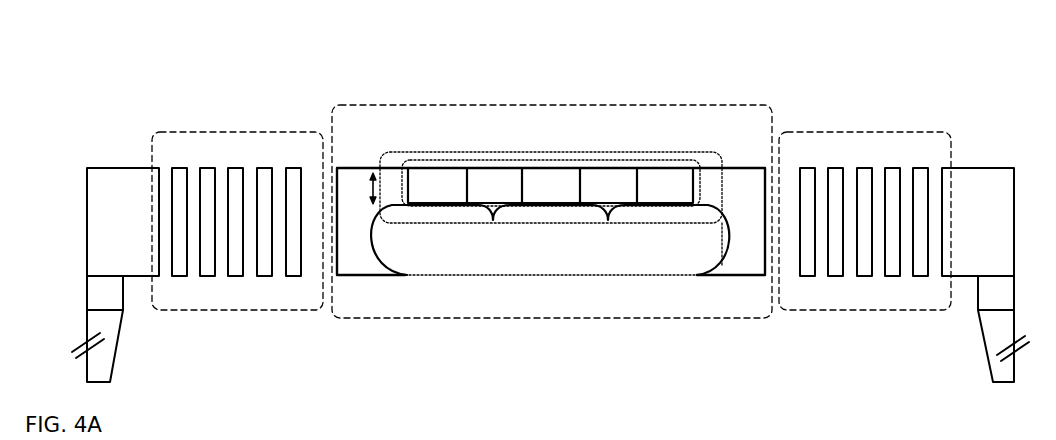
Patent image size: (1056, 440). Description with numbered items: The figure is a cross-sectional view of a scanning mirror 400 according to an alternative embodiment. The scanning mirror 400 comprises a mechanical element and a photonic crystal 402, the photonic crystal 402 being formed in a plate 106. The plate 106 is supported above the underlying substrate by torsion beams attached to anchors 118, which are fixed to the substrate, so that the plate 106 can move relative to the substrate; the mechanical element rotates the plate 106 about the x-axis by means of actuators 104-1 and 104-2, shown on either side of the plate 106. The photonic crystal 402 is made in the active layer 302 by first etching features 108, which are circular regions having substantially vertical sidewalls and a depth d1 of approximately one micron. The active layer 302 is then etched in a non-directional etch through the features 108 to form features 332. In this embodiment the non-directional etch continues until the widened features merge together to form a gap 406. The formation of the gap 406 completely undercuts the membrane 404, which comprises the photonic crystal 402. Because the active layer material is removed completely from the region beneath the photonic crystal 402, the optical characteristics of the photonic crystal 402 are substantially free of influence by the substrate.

The scanning mirror 400 is at (312, 47).
The anchors 118 is at (115, 167).
The active layer 302 is at (128, 254).
The actuator 104-1 is at (247, 311).
The actuator 104-2 is at (855, 311).
The plate 106 is at (552, 318).
The photonic crystal 402 is at (500, 162).
The membrane 404 is at (593, 153).
The features 108 is at (421, 199).
The features 332 is at (421, 256).
The gap 406 is at (587, 275).
The depth d1 is at (360, 188).